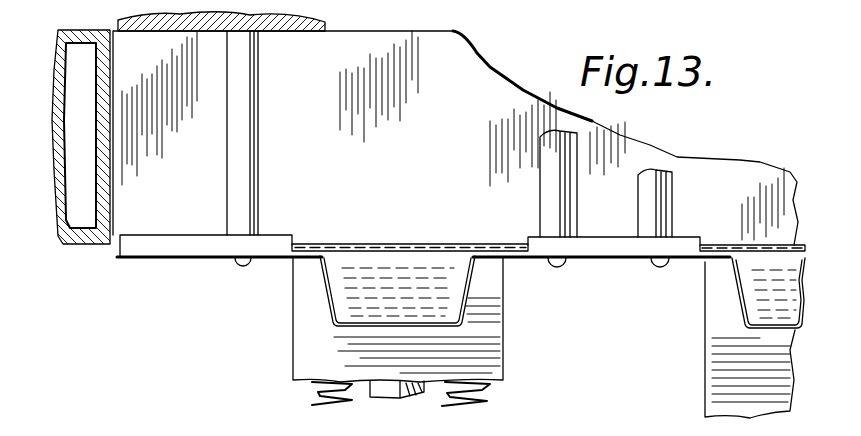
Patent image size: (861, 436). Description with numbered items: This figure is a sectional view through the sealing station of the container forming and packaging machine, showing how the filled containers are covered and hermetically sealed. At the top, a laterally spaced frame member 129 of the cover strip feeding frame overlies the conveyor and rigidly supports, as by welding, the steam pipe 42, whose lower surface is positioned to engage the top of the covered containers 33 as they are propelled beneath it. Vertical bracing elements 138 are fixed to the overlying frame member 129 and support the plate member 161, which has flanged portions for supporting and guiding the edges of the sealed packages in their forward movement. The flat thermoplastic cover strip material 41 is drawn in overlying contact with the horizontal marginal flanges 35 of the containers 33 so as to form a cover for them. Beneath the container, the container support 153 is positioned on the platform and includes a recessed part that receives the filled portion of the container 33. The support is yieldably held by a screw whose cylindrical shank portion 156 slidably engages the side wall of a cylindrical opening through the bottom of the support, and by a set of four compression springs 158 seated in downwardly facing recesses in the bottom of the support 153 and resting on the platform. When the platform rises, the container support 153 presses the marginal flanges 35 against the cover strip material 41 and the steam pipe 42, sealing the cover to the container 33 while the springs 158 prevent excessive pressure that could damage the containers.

The container 33 is at (318, 296).
The marginal flange 35 is at (504, 259).
The cover strip material 41 is at (434, 245).
The steam pipe 42 is at (456, 143).
The frame member 129 is at (323, 29).
The bracing element 138 is at (258, 152).
The container support 153 is at (312, 346).
The cylindrical shank portion 156 is at (376, 396).
The compression spring 158 is at (490, 400).
The plate member 161 is at (160, 255).